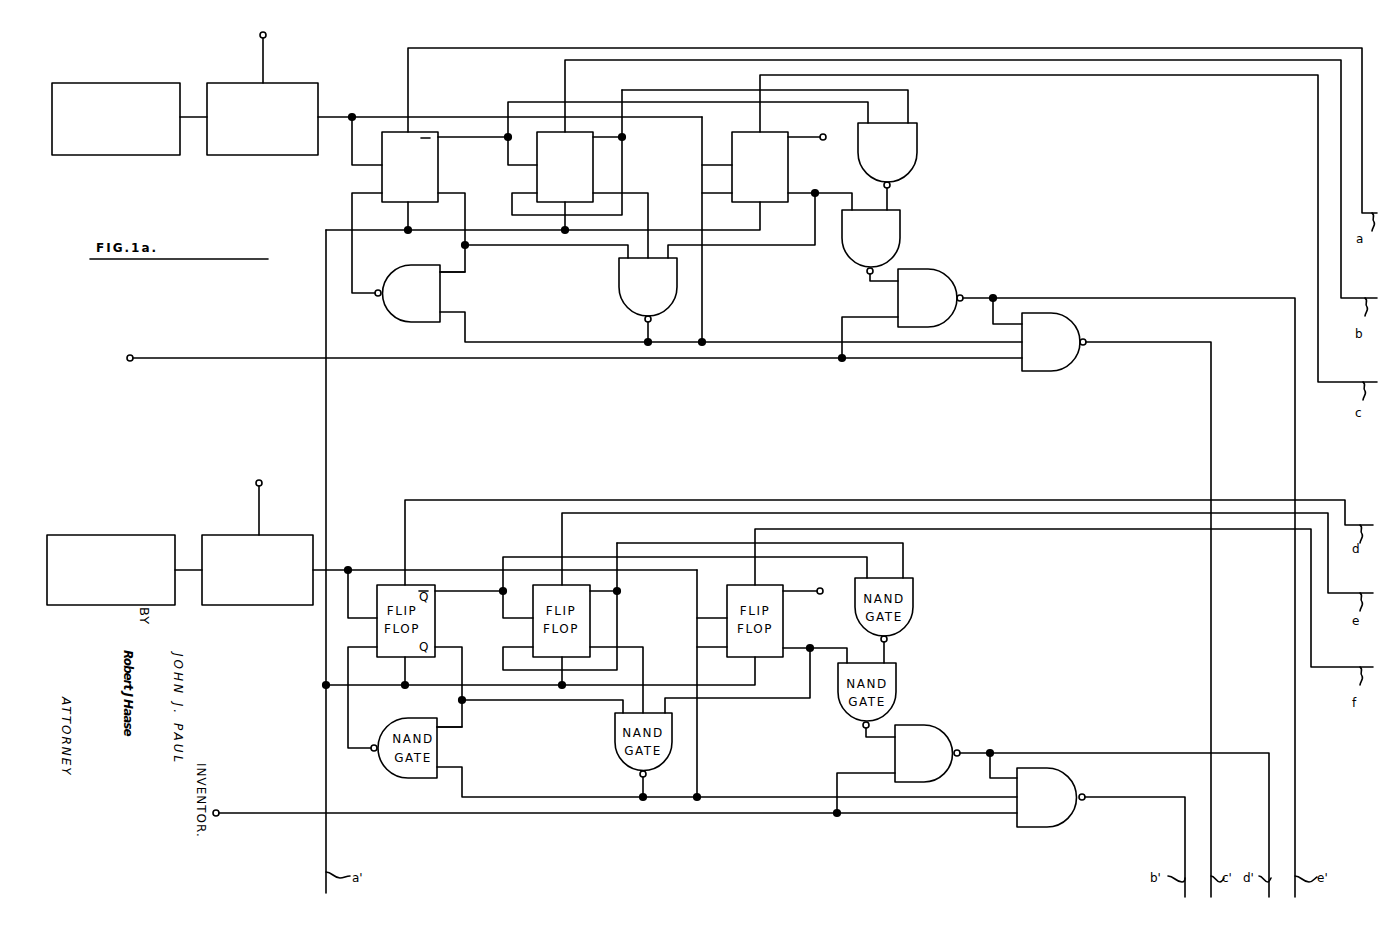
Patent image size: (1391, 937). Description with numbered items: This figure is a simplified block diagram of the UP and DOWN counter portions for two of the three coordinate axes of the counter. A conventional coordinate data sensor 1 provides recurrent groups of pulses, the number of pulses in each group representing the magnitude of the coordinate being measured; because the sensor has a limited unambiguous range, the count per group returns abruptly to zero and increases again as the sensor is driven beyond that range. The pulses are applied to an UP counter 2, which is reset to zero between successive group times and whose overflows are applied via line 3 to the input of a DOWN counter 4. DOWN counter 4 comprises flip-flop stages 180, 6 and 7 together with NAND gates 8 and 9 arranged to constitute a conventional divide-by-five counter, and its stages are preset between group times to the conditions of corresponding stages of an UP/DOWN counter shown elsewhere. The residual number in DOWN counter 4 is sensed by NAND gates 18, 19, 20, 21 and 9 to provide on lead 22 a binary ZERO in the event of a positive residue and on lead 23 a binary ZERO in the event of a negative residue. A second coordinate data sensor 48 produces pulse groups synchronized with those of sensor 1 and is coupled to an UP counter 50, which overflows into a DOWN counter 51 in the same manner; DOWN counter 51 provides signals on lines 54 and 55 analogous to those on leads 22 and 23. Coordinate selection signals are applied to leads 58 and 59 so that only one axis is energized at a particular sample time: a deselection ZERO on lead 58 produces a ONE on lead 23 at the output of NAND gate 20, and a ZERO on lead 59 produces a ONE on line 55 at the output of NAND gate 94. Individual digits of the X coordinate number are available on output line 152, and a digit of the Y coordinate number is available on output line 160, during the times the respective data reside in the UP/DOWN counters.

The coordinate data sensor 1 is at (113, 83).
The UP counter 2 is at (232, 83).
The output line 152 is at (266, 40).
The line 3 is at (336, 117).
The flip-flop stage 180 is at (382, 178).
The flip-flop stage 6 is at (537, 178).
The flip-flop stage 7 is at (732, 178).
The DOWN counter 4 is at (676, 156).
The NAND gate 8 is at (385, 310).
The NAND gate 9 is at (619, 282).
The NAND gate 18 is at (917, 141).
The NAND gate 19 is at (900, 230).
The NAND gate 20 is at (951, 269).
The NAND gate 21 is at (1077, 313).
The lead 22 is at (1210, 410).
The lead 23 is at (1295, 343).
The lead 58 is at (135, 356).
The coordinate data sensor 48 is at (110, 535).
The UP counter 50 is at (252, 605).
The output line 160 is at (262, 490).
The DOWN counter 51 is at (672, 602).
The NAND gate 94 is at (942, 725).
The line 54 is at (1086, 790).
The line 55 is at (1235, 752).
The lead 59 is at (218, 810).